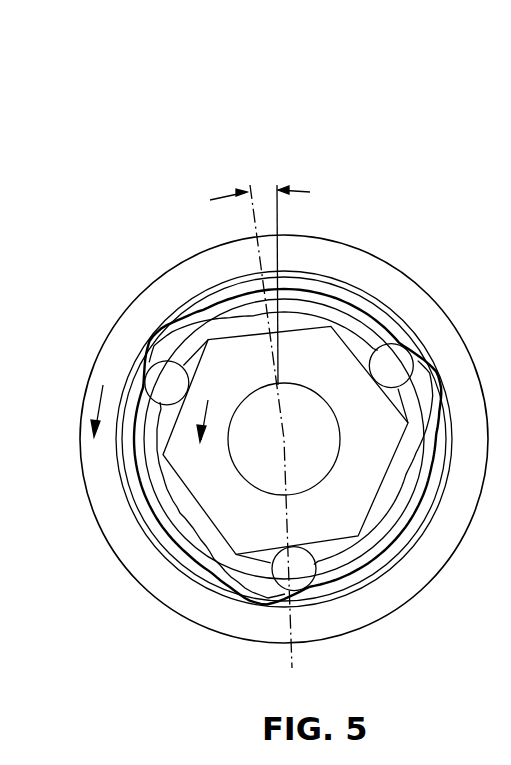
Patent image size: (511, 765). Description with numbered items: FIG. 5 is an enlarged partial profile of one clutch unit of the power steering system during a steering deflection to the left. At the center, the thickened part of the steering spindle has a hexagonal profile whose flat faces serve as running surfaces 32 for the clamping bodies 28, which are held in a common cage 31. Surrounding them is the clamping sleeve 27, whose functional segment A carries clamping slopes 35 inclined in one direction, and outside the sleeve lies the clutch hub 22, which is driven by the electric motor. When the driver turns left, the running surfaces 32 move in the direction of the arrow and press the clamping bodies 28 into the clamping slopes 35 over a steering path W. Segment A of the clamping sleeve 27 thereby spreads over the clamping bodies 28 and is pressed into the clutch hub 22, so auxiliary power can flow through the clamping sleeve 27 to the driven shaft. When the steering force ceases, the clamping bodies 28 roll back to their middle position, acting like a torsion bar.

The clutch hub 22 is at (302, 253).
The clamping sleeve 27 is at (383, 317).
The clamping bodies 28 is at (452, 330).
The common cage 31 is at (307, 305).
The running surfaces 32 is at (252, 330).
The clamping slopes 35 is at (392, 362).
The steering path W is at (258, 192).